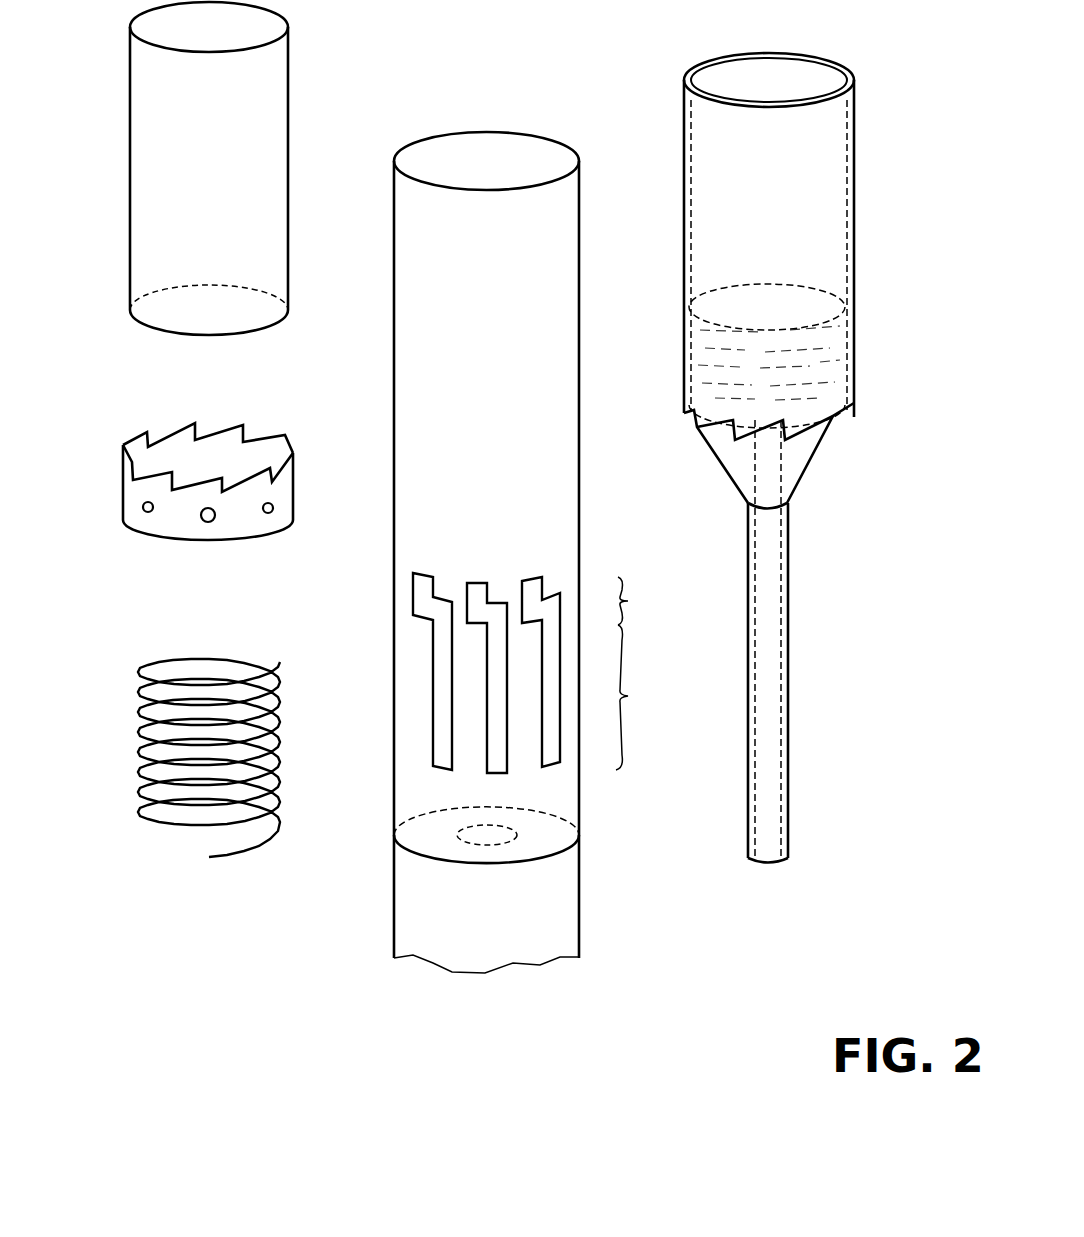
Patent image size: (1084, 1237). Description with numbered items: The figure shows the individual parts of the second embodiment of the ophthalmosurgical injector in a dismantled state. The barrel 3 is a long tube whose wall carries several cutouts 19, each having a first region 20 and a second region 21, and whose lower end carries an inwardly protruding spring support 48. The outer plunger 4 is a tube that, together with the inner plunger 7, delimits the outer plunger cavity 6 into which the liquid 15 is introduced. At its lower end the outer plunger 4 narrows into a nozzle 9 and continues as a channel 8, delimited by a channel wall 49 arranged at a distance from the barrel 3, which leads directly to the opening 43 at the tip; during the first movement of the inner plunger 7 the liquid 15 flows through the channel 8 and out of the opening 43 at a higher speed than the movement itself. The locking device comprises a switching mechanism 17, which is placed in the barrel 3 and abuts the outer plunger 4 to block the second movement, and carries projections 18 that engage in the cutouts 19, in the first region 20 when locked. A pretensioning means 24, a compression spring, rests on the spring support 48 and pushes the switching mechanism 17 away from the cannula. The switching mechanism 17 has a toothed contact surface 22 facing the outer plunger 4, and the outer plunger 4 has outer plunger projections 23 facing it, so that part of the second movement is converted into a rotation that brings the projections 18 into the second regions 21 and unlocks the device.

The barrel 3 is at (394, 258).
The outer plunger 4 is at (855, 158).
The outer plunger cavity 6 is at (830, 305).
The inner plunger 7 is at (130, 145).
The channel 8 is at (770, 760).
The nozzle 9 is at (716, 460).
The liquid 15 is at (830, 360).
The switching mechanism 17 is at (123, 493).
The projection 18 is at (148, 513).
The cutout 19 is at (440, 665).
The first region 20 is at (648, 601).
The second region 21 is at (647, 697).
The contact surface 22 is at (145, 447).
The outer plunger projection 23 is at (806, 430).
The pretensioning means 24 is at (138, 702).
The opening 43 is at (768, 864).
The spring support 48 is at (560, 838).
The channel wall 49 is at (790, 692).